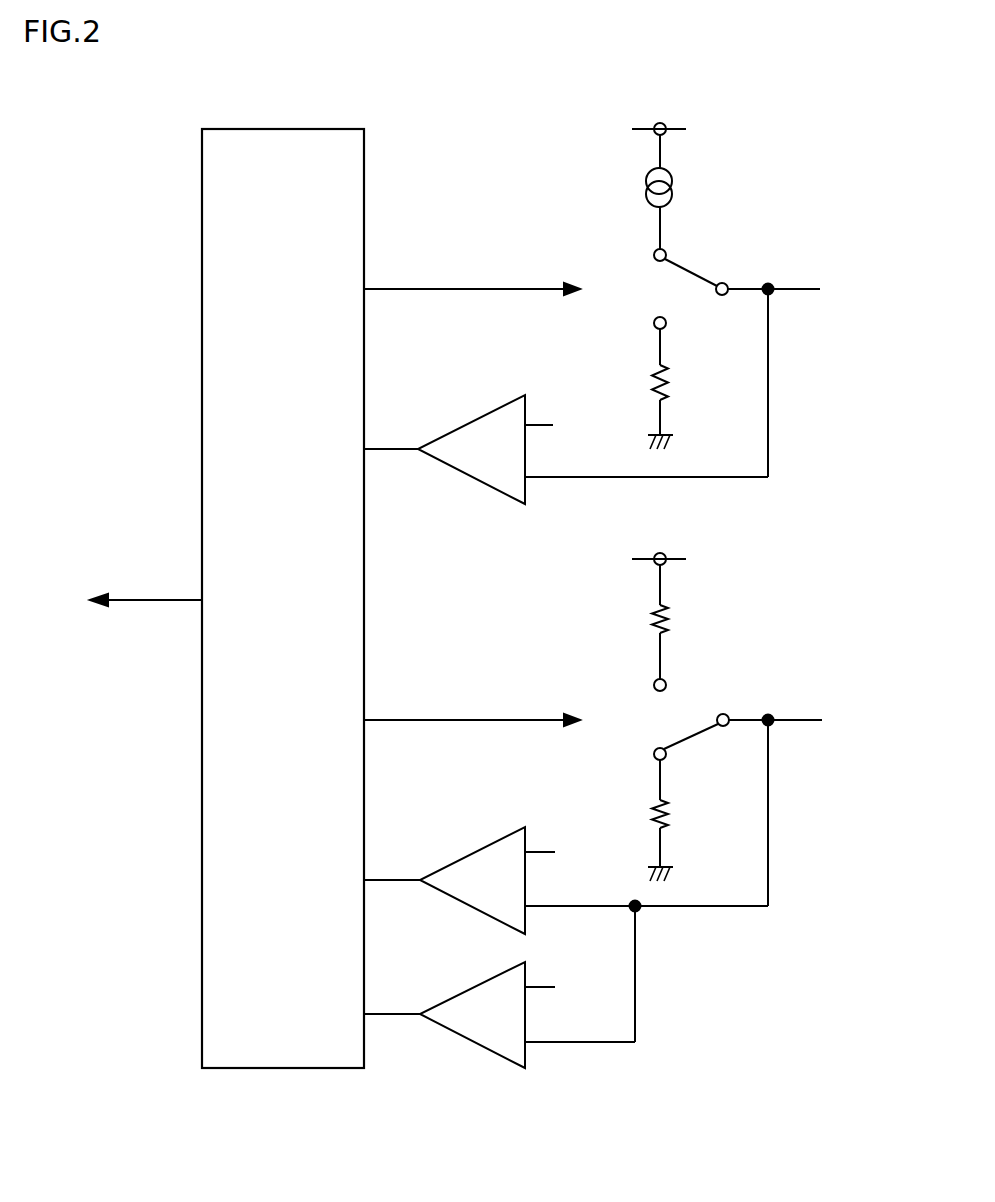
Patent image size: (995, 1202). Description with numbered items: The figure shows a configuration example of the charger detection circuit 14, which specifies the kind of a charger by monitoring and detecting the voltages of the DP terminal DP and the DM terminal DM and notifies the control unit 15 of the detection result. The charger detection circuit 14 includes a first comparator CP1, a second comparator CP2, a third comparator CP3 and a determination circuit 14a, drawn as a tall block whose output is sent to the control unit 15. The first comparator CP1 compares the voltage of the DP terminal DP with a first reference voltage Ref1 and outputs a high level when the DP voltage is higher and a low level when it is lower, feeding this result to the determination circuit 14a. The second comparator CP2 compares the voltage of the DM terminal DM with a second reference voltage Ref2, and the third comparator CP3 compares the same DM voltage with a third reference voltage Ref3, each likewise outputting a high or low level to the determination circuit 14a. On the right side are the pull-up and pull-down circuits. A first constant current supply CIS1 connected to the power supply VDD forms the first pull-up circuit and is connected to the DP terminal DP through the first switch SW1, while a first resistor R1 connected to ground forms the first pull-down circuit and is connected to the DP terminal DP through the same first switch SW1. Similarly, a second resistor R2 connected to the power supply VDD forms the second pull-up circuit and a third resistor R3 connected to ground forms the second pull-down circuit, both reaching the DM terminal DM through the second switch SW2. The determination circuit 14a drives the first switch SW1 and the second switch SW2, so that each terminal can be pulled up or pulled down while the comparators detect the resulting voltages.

The charger detection circuit 14 is at (462, 1147).
The determination circuit 14a is at (310, 128).
The control unit 15 is at (134, 601).
The first comparator CP1 is at (497, 407).
The second comparator CP2 is at (497, 838).
The third comparator CP3 is at (497, 973).
The first resistor R1 is at (670, 383).
The second resistor R2 is at (673, 628).
The third resistor R3 is at (671, 820).
The first switch SW1 is at (592, 275).
The second switch SW2 is at (593, 734).
The first constant current supply CIS1 is at (682, 192).
The DP terminal DP is at (807, 377).
The DM terminal DM is at (807, 807).
The power supply VDD is at (659, 332).
The first reference voltage Ref1 is at (561, 425).
The second reference voltage Ref2 is at (563, 853).
The third reference voltage Ref3 is at (563, 988).